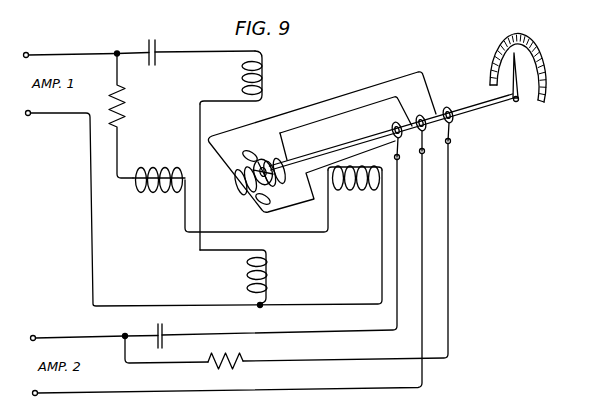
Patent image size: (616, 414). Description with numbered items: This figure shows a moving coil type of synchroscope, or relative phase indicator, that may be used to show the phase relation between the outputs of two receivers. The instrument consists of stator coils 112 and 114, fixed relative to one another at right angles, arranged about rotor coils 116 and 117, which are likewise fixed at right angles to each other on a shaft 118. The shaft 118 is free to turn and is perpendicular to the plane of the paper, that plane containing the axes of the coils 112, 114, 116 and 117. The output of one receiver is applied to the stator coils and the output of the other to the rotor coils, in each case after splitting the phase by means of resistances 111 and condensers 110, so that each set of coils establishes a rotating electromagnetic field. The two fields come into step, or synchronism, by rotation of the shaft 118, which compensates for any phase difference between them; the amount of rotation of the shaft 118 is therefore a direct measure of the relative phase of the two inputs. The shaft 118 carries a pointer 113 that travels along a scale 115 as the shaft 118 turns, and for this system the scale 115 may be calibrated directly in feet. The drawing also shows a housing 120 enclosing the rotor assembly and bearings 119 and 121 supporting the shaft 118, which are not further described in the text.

The condensers 110 is at (152, 37).
The resistances 111 is at (130, 108).
The stator coil 112 is at (263, 70).
The pointer 113 is at (520, 86).
The stator coil 114 is at (155, 192).
The scale 115 is at (530, 57).
The rotor coil 116 is at (250, 143).
The rotor coil 117 is at (234, 195).
The shaft 118 is at (475, 110).
The bearing 119 is at (392, 126).
The housing 120 is at (413, 75).
The bearing 121 is at (448, 108).